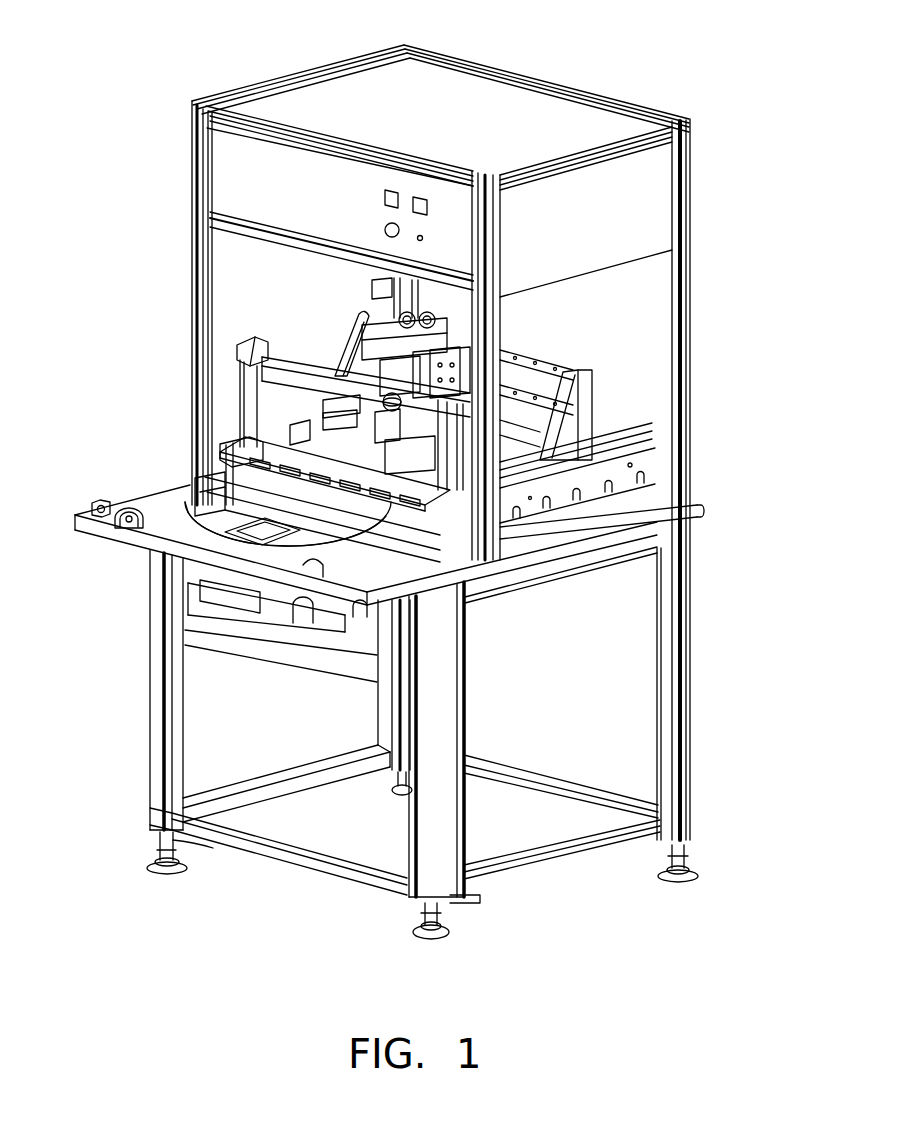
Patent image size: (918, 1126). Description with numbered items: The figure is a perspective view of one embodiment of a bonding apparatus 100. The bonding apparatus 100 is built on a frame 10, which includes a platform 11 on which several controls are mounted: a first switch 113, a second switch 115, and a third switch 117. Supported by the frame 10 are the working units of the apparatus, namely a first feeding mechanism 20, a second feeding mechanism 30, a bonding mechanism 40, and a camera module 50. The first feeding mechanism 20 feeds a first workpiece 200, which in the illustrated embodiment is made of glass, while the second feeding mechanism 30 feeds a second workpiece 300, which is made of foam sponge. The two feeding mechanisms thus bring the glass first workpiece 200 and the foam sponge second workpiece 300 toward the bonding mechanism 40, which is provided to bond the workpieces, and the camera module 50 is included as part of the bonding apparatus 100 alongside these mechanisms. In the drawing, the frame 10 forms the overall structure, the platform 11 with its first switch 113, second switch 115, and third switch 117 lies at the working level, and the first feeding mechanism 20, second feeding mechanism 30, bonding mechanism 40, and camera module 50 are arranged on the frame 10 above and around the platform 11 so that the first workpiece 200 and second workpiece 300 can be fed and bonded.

The bonding apparatus 100 is at (234, 46).
The frame 10 is at (686, 563).
The platform 11 is at (163, 527).
The first switch 113 is at (100, 507).
The second switch 115 is at (123, 525).
The third switch 117 is at (317, 577).
The first feeding mechanism 20 is at (212, 505).
The second feeding mechanism 30 is at (247, 391).
The bonding mechanism 40 is at (573, 402).
The camera module 50 is at (372, 286).
The first workpiece 200 is at (207, 533).
The second workpiece 300 is at (235, 450).